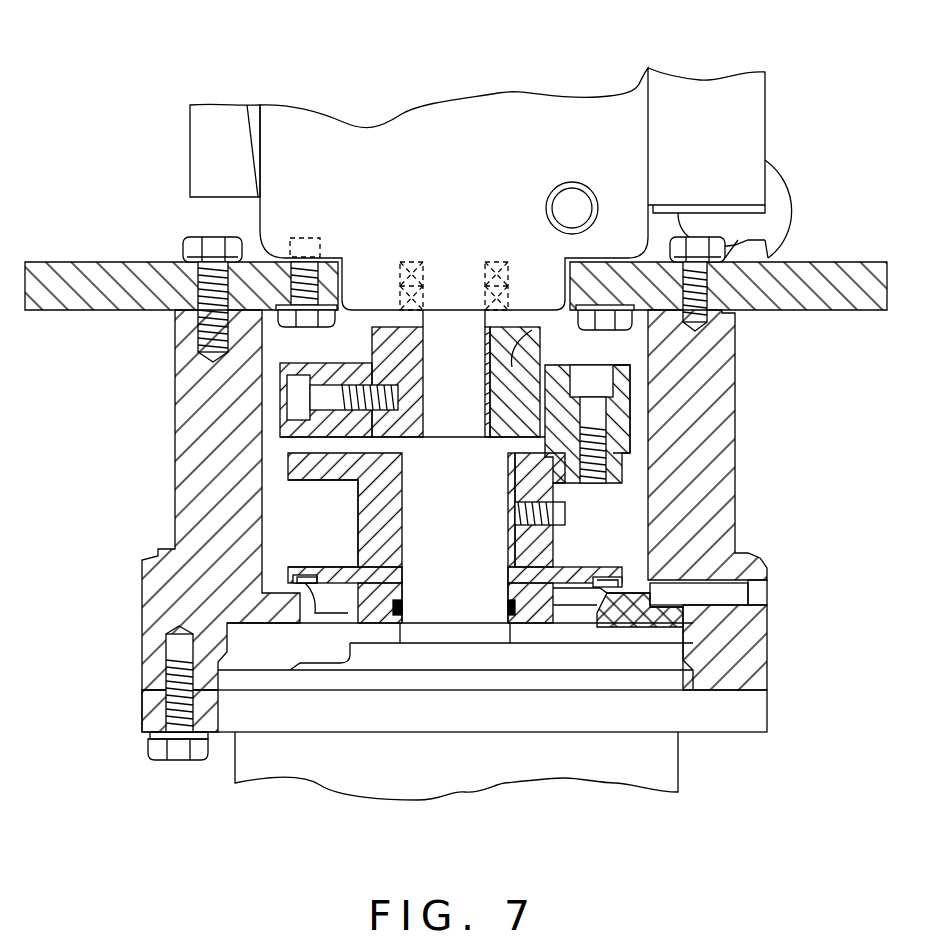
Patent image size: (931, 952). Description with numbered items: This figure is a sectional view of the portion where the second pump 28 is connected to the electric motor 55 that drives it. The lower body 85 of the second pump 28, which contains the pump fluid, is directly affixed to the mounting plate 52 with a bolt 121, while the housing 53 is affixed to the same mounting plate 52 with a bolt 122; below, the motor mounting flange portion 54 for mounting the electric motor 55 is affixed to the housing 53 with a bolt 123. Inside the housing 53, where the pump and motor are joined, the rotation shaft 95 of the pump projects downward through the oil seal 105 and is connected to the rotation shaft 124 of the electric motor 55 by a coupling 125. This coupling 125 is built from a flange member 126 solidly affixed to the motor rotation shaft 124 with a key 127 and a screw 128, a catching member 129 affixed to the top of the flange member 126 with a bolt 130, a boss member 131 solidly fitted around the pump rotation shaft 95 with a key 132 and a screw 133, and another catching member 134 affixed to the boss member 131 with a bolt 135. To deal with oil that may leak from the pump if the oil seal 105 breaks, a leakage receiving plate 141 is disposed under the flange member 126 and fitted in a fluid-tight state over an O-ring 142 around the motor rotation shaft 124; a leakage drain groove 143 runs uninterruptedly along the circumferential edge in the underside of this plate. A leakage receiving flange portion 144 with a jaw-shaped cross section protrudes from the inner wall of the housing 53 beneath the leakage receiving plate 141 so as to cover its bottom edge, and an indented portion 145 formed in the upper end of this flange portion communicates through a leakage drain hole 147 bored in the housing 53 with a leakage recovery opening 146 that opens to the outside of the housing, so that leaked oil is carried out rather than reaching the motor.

The second pump 28 is at (541, 110).
The lower body 85 is at (628, 148).
The oil seal 105 is at (437, 265).
The mounting plate 52 is at (857, 268).
The bolt 122 is at (210, 243).
The bolt 121 is at (305, 240).
The housing 53 is at (728, 482).
The motor mounting flange portion 54 is at (753, 713).
The bolt 123 is at (180, 752).
The electric motor 55 is at (505, 786).
The rotation shaft 95 is at (433, 345).
The screw 133 is at (537, 355).
The key 132 is at (515, 325).
The catching member 134 is at (287, 428).
The bolt 135 is at (293, 390).
The boss member 131 is at (405, 437).
The rotation shaft 124 is at (413, 537).
The flange member 126 is at (312, 465).
The screw 128 is at (565, 509).
The key 127 is at (515, 548).
The leakage receiving plate 141 is at (622, 577).
The bolt 130 is at (620, 473).
The coupling 125 is at (635, 403).
The catching member 129 is at (618, 428).
The leakage drain groove 143 is at (652, 580).
The indented portion 145 is at (755, 560).
The leakage recovery opening 146 is at (762, 592).
The leakage drain hole 147 is at (712, 598).
The leakage receiving flange portion 144 is at (715, 622).
The O-ring 142 is at (537, 625).